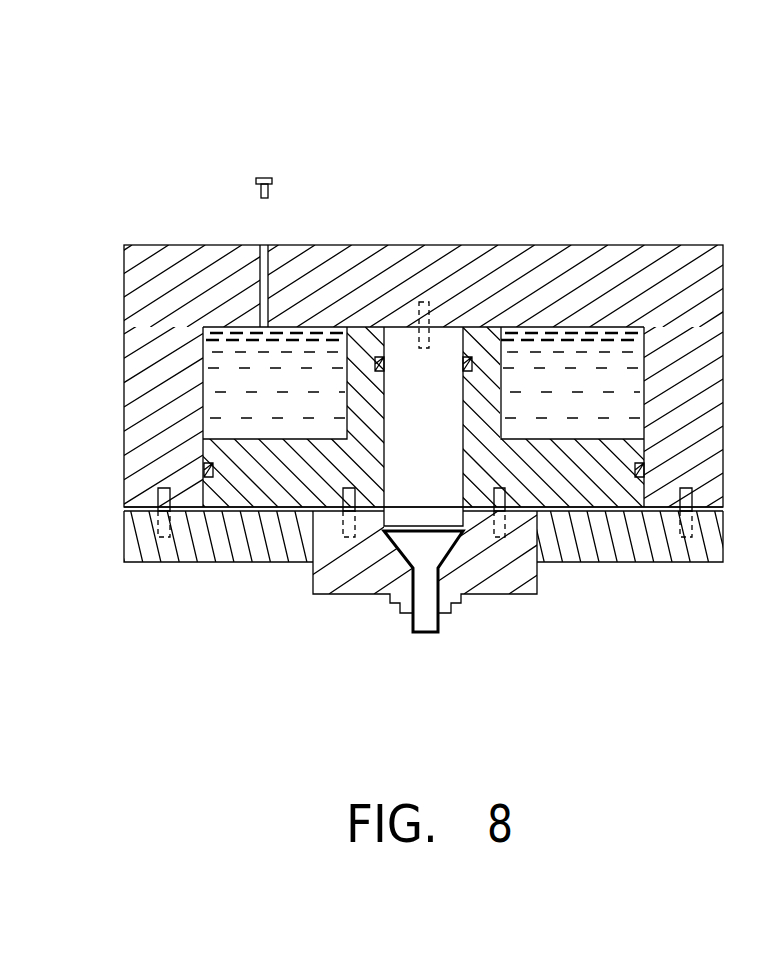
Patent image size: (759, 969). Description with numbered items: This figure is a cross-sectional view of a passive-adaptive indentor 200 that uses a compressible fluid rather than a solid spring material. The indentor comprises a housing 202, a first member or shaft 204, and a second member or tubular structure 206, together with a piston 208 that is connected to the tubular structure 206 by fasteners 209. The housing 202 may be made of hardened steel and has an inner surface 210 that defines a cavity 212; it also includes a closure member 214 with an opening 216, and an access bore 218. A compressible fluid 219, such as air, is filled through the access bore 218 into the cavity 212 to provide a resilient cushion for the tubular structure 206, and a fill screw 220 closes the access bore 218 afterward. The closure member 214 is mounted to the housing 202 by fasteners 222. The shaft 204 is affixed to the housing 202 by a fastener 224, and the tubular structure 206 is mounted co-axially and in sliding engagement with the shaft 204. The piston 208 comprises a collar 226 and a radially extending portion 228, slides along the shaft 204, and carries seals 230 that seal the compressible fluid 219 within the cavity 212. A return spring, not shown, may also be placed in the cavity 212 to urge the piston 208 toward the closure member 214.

The passive-adaptive indentor 200 is at (197, 160).
The housing 202 is at (633, 245).
The shaft 204 is at (450, 487).
The tubular structure 206 is at (489, 585).
The piston 208 is at (316, 486).
The fasteners 209 is at (352, 537).
The inner surface 210 is at (302, 342).
The cavity 212 is at (205, 398).
The closure member 214 is at (586, 548).
The opening 216 is at (353, 594).
The access bore 218 is at (263, 245).
The compressible fluid 219 is at (565, 335).
The fill screw 220 is at (268, 178).
The fasteners 222 is at (164, 537).
The fastener 224 is at (423, 302).
The collar 226 is at (507, 381).
The radially extending portion 228 is at (565, 439).
The seals 230 is at (209, 462).